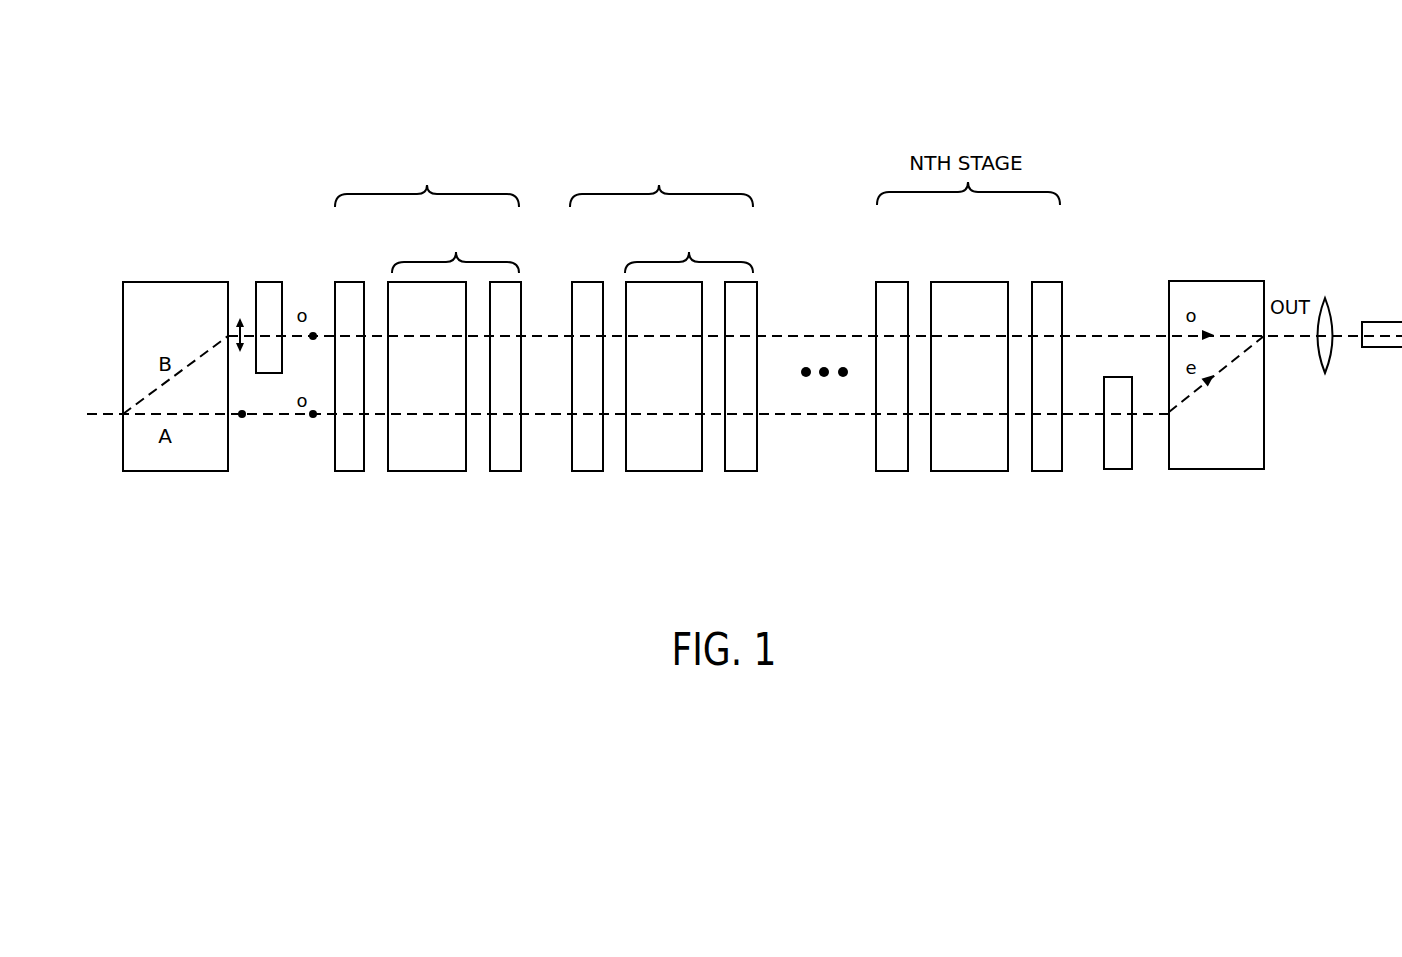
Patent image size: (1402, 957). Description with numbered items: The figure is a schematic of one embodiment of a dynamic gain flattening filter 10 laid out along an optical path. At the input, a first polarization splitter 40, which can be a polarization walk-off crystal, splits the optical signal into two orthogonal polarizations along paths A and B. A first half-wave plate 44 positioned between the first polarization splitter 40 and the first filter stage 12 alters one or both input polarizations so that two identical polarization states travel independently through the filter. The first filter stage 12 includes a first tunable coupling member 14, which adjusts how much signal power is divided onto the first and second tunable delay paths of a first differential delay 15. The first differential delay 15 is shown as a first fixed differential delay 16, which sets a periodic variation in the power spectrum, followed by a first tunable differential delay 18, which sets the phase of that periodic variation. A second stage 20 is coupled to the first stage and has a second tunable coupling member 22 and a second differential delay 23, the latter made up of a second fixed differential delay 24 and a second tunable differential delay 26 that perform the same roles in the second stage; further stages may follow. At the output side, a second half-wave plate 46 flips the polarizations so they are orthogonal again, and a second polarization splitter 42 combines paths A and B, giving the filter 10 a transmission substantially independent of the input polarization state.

The dynamic gain flattening filter 10 is at (297, 160).
The first filter stage 12 is at (488, 182).
The second stage 20 is at (723, 178).
The first tunable coupling member 14 is at (352, 471).
The first differential delay 15 is at (454, 377).
The first fixed differential delay 16 is at (425, 471).
The first tunable differential delay 18 is at (505, 471).
The second tunable coupling member 22 is at (590, 471).
The second differential delay 23 is at (691, 377).
The second fixed differential delay 24 is at (676, 471).
The second tunable differential delay 26 is at (751, 471).
The first polarization splitter 40 is at (168, 300).
The second polarization splitter 42 is at (1218, 296).
The first half-wave plate 44 is at (266, 293).
The second half-wave plate 46 is at (1118, 469).